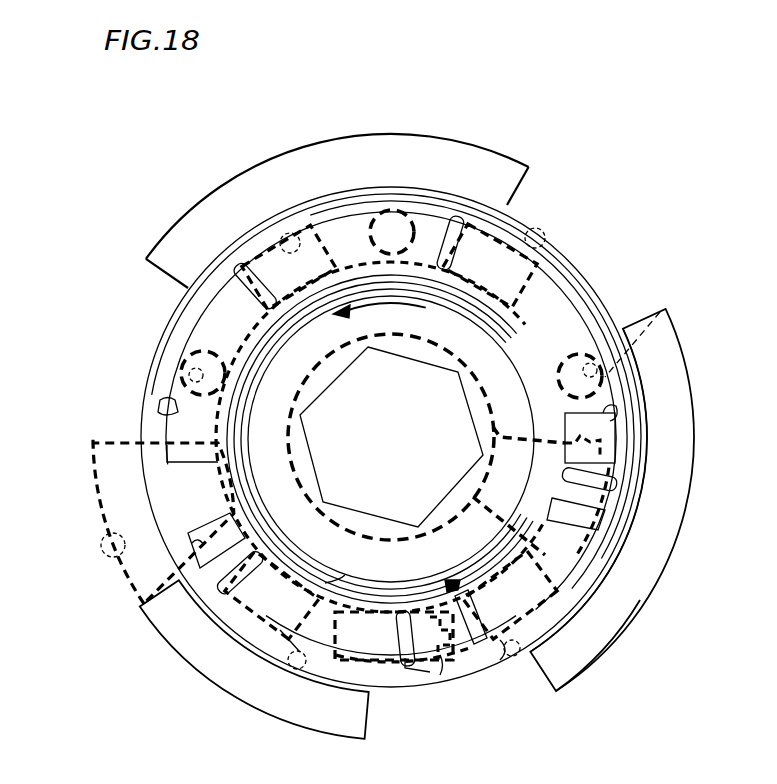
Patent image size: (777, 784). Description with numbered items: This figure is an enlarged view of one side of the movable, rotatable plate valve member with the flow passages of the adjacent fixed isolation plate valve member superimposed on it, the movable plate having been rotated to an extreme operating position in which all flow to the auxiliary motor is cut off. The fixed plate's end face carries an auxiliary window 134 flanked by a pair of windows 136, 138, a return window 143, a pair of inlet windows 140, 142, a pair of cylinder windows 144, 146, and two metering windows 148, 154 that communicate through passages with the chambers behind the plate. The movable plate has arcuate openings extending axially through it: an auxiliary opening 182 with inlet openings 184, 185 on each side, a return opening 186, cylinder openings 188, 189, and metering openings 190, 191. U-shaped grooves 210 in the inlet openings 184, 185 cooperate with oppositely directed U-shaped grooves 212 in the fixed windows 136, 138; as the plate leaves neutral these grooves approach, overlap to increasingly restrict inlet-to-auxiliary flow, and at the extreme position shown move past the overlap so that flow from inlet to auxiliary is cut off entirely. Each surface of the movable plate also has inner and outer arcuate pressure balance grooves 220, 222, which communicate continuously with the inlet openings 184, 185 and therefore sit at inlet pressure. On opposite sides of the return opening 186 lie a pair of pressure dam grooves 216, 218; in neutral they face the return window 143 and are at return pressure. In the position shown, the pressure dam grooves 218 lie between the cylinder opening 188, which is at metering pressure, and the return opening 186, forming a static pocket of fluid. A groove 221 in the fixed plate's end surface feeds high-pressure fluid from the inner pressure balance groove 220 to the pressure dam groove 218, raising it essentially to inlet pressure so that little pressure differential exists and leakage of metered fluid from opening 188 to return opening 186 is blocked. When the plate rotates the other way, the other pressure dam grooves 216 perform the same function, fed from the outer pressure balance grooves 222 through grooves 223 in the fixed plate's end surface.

The window 138 is at (300, 225).
The auxiliary window 134 is at (392, 232).
The auxiliary opening 182 is at (432, 212).
The U-shaped groove 210 is at (517, 248).
The U-shaped groove 212 is at (540, 232).
The window 136 is at (548, 330).
The inlet opening 184 is at (566, 332).
The inlet window 140 is at (661, 311).
The metering opening 190 is at (612, 405).
The metering window 154 is at (620, 462).
The outer pressure balance groove 222 is at (624, 516).
The cylinder opening 188 is at (551, 576).
The cylinder window 144 is at (563, 633).
The pressure dam groove 218 is at (503, 647).
The return opening 186 is at (478, 590).
The return window 143 is at (443, 690).
The pressure dam groove 216 is at (398, 660).
The groove 223 is at (300, 660).
The cylinder opening 189 is at (325, 660).
The cylinder window 146 is at (260, 610).
The metering opening 191 is at (188, 540).
The metering window 148 is at (100, 540).
The inlet opening 185 is at (172, 410).
The inlet window 142 is at (190, 366).
The inner pressure balance groove 220 is at (330, 587).
The groove 221 is at (452, 582).